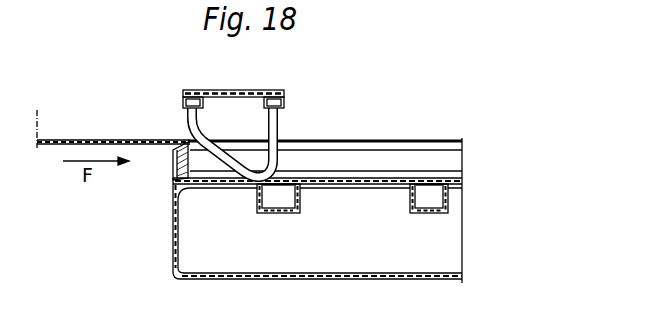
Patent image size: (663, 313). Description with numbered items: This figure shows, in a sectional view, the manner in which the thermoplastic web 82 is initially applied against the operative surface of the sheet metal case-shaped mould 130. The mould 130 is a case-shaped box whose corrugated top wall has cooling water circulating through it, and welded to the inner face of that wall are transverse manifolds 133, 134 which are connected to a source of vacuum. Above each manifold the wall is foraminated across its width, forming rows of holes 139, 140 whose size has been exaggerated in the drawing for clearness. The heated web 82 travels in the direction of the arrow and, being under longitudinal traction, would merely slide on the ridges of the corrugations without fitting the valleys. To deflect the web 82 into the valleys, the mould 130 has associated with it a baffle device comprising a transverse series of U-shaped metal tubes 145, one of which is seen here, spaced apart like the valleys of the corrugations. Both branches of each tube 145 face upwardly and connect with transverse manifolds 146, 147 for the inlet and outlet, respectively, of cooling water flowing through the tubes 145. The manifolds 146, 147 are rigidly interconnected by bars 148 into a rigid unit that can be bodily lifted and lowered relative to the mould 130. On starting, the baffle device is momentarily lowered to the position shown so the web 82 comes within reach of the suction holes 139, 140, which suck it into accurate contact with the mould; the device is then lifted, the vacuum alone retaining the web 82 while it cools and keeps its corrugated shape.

The thermoplastic web 82 is at (72, 140).
The sheet metal case-shaped mould 130 is at (172, 246).
The manifold 133 is at (278, 213).
The manifold 134 is at (428, 213).
The row of holes 139 is at (277, 186).
The row of holes 140 is at (428, 186).
The U-shaped metal tube 145 is at (278, 126).
The transverse manifold 146 is at (183, 100).
The transverse manifold 147 is at (284, 100).
The bar 148 is at (232, 91).